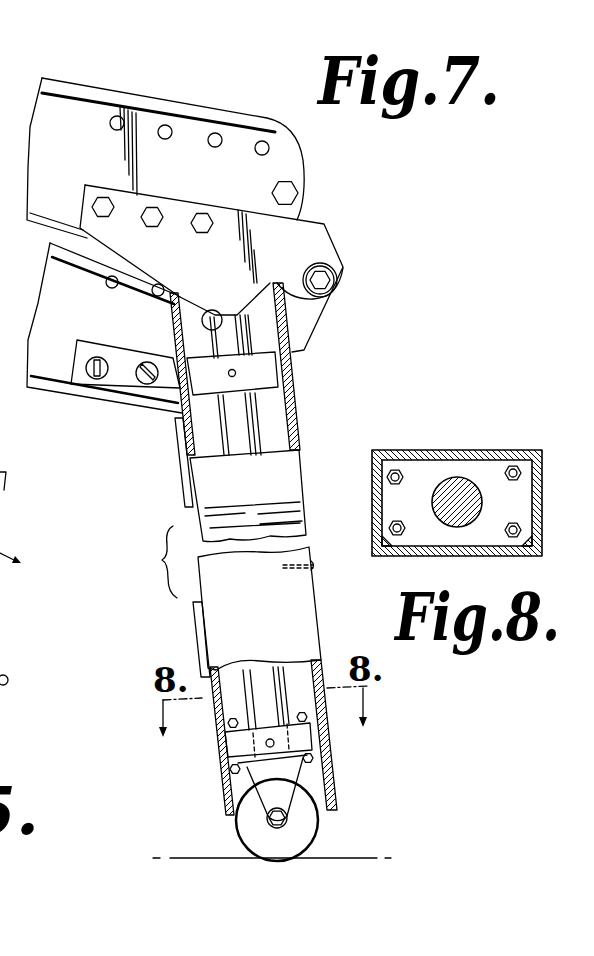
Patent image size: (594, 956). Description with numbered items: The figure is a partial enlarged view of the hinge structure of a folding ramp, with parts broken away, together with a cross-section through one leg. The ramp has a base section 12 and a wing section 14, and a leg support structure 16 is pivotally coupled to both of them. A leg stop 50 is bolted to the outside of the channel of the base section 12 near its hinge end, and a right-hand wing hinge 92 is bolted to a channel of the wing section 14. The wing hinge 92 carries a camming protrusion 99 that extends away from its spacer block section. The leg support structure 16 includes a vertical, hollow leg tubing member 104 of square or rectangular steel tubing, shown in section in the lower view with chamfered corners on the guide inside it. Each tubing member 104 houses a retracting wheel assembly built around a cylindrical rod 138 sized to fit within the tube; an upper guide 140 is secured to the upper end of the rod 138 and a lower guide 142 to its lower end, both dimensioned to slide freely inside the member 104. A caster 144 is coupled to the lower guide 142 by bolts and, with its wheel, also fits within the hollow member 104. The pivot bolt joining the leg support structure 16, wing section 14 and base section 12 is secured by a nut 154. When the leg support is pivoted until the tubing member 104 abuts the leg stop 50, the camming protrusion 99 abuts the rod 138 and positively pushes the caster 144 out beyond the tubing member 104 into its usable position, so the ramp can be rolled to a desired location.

In FIG. 7, the base section 12 is at (55, 404).
In FIG. 7, the wing section 14 is at (181, 97).
In FIG. 7, the leg support structure 16 is at (176, 515).
In FIG. 7, the leg stop 50 is at (107, 386).
In FIG. 7, the right-hand wing hinge 92 is at (311, 220).
In FIG. 7, the camming protrusion 99 is at (207, 311).
In FIG. 8, the leg tubing member 104 is at (542, 498).
In FIG. 7, the cylindrical rod 138 is at (238, 450).
In FIG. 8, the cylindrical rod 138 is at (442, 508).
In FIG. 7, the upper guide 140 is at (267, 373).
In FIG. 7, the lower guide 142 is at (307, 742).
In FIG. 8, the lower guide 142 is at (485, 470).
In FIG. 7, the caster 144 is at (307, 837).
In FIG. 7, the nut 154 is at (330, 280).